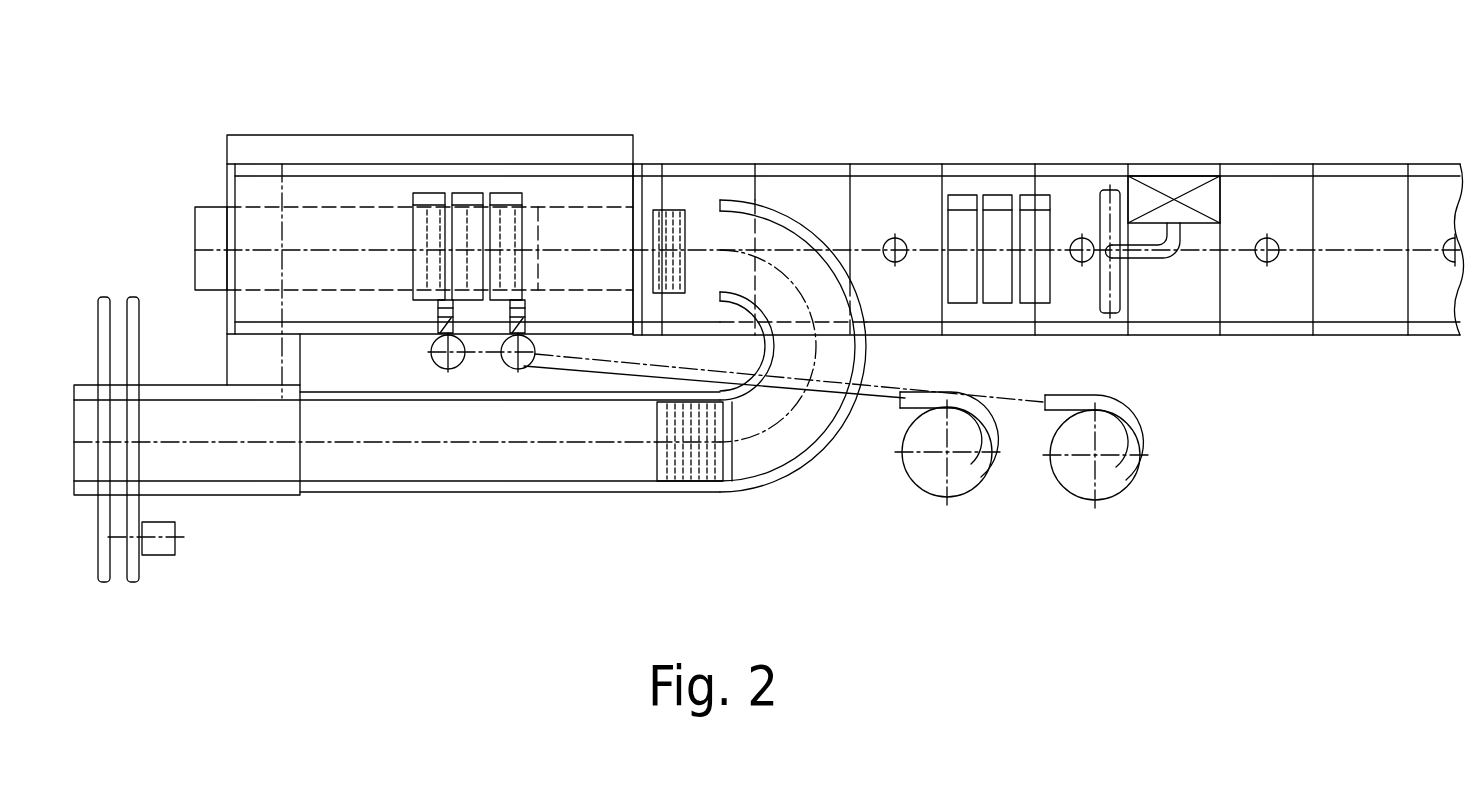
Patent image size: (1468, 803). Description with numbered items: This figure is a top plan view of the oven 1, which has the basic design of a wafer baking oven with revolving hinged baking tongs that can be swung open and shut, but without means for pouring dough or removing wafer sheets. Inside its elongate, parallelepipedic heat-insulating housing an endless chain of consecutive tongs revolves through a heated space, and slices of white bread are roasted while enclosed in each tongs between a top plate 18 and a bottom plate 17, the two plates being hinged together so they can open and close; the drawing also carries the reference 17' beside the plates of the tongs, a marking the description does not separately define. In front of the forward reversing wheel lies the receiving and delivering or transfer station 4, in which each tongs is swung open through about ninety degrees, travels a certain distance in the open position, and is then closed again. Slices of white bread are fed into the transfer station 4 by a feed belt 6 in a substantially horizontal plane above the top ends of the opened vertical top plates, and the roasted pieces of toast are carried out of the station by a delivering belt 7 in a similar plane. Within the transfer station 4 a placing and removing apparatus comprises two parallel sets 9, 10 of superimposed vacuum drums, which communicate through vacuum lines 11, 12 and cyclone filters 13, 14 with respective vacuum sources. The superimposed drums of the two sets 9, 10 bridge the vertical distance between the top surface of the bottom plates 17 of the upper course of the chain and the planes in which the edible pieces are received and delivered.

The oven 1 is at (1365, 333).
The transfer station 4 is at (304, 133).
The feed belt 6 is at (577, 227).
The delivering belt 7 is at (340, 228).
The set of vacuum drums 9 is at (420, 265).
The set of vacuum drums 10 is at (533, 204).
The vacuum line 11 is at (430, 370).
The vacuum line 12 is at (508, 370).
The cyclone filter 13 is at (927, 470).
The cyclone filter 14 is at (1080, 478).
The bottom plate 17 is at (456, 338).
The gripper jaw 17' is at (750, 190).
The top plate 18 is at (470, 195).